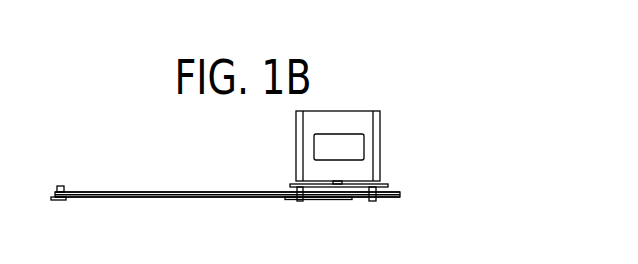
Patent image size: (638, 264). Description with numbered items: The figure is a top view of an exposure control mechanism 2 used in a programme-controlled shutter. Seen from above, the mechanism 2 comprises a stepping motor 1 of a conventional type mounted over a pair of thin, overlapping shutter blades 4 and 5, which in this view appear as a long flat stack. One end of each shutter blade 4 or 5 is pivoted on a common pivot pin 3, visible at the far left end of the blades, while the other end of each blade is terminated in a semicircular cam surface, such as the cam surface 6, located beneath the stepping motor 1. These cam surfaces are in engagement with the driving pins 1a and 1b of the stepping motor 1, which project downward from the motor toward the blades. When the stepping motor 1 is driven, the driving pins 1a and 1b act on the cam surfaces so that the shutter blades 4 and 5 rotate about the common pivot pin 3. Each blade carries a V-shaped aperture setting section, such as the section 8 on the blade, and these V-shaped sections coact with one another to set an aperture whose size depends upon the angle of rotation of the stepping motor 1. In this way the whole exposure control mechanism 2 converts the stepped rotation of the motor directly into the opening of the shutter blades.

The stepping motor 1 is at (381, 126).
The driving pin 1a is at (297, 202).
The driving pin 1b is at (373, 202).
The exposure control mechanism 2 is at (410, 177).
The common pivot pin 3 is at (60, 201).
The shutter blade 4 is at (240, 200).
The shutter blade 5 is at (245, 192).
The semicircular cam surface 6 is at (317, 200).
The V-shaped aperture setting section 8 is at (162, 192).